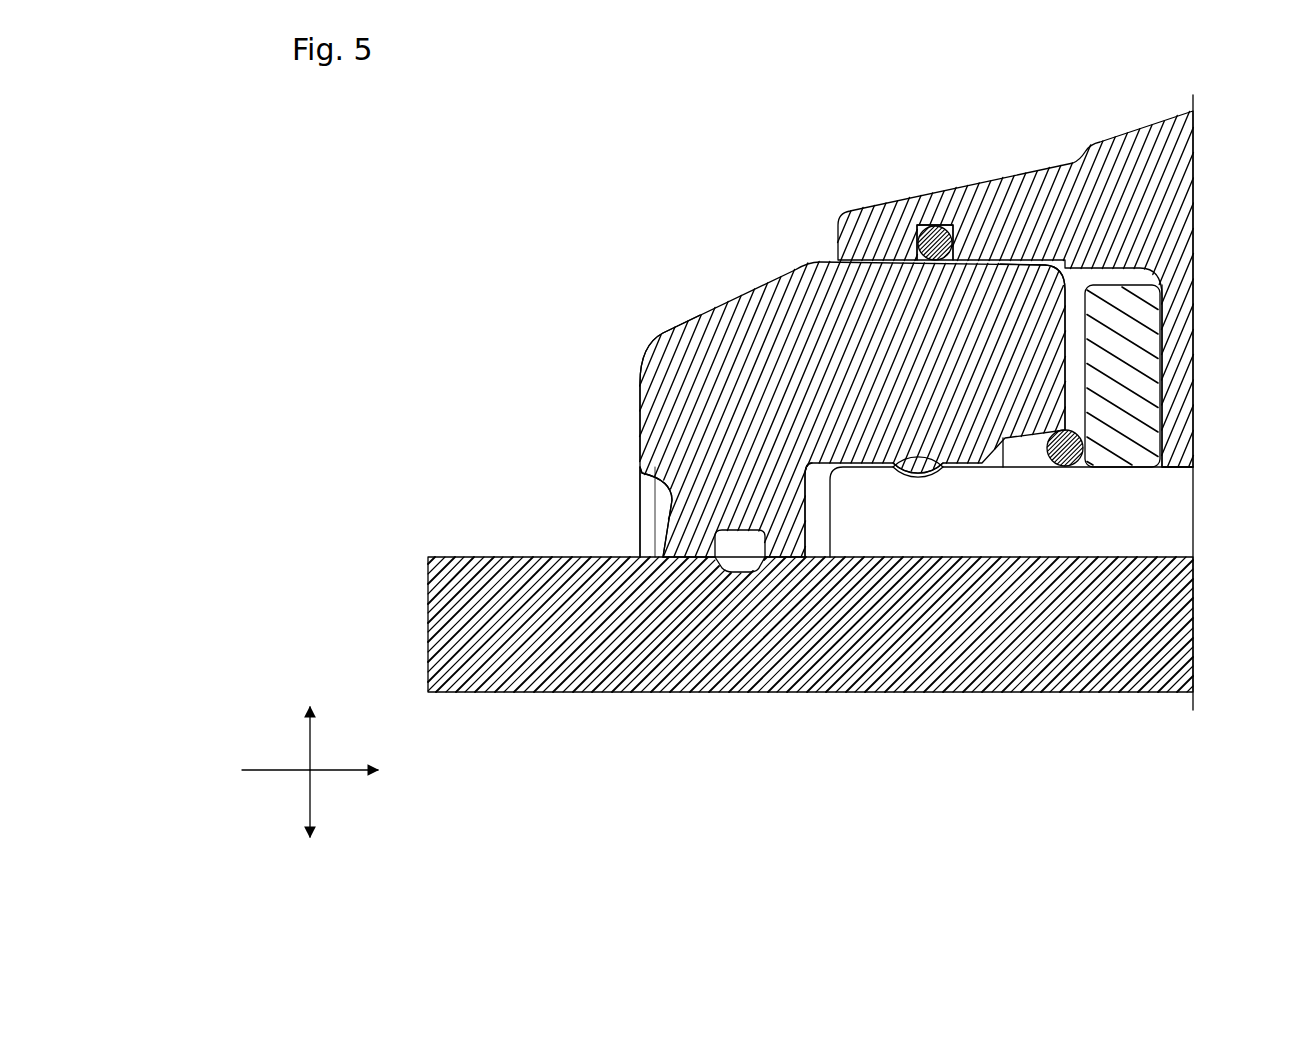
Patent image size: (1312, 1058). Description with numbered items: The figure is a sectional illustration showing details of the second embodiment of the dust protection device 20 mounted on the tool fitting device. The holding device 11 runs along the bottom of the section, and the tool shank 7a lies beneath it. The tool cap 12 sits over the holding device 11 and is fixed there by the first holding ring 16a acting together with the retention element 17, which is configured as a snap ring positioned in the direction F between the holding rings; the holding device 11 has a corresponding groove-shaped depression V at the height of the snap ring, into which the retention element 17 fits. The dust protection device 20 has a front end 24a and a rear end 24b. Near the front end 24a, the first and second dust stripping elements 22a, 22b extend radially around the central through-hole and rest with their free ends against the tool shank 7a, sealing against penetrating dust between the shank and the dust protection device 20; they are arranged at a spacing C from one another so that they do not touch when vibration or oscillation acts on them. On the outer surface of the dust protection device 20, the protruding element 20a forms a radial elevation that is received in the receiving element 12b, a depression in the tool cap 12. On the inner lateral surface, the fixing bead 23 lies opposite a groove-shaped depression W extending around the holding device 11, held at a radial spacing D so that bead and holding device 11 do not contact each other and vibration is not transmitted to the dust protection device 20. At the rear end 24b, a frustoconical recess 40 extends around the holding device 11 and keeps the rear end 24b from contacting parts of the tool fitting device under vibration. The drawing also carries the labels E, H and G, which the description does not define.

The tool shank 7a is at (1180, 620).
The holding device 11 is at (1176, 500).
The tool cap 12 is at (1097, 155).
The receiving element 12b is at (935, 253).
The first holding ring 16a is at (1122, 370).
The retention element 17 is at (1172, 396).
The dust protection device 20 is at (680, 358).
The protruding element 20a is at (932, 243).
The first dust stripping element 22a is at (687, 532).
The second dust stripping element 22b is at (795, 533).
The fixing bead 23 is at (917, 467).
The front end 24a is at (655, 402).
The rear end 24b is at (1043, 315).
The frustoconical recess 40 is at (1025, 450).
The spacing C is at (743, 573).
The radial spacing D is at (830, 461).
The gap E is at (829, 230).
The depression V is at (1065, 467).
The depression W is at (935, 470).
The direction H is at (296, 736).
The direction F is at (310, 754).
The direction G is at (325, 807).